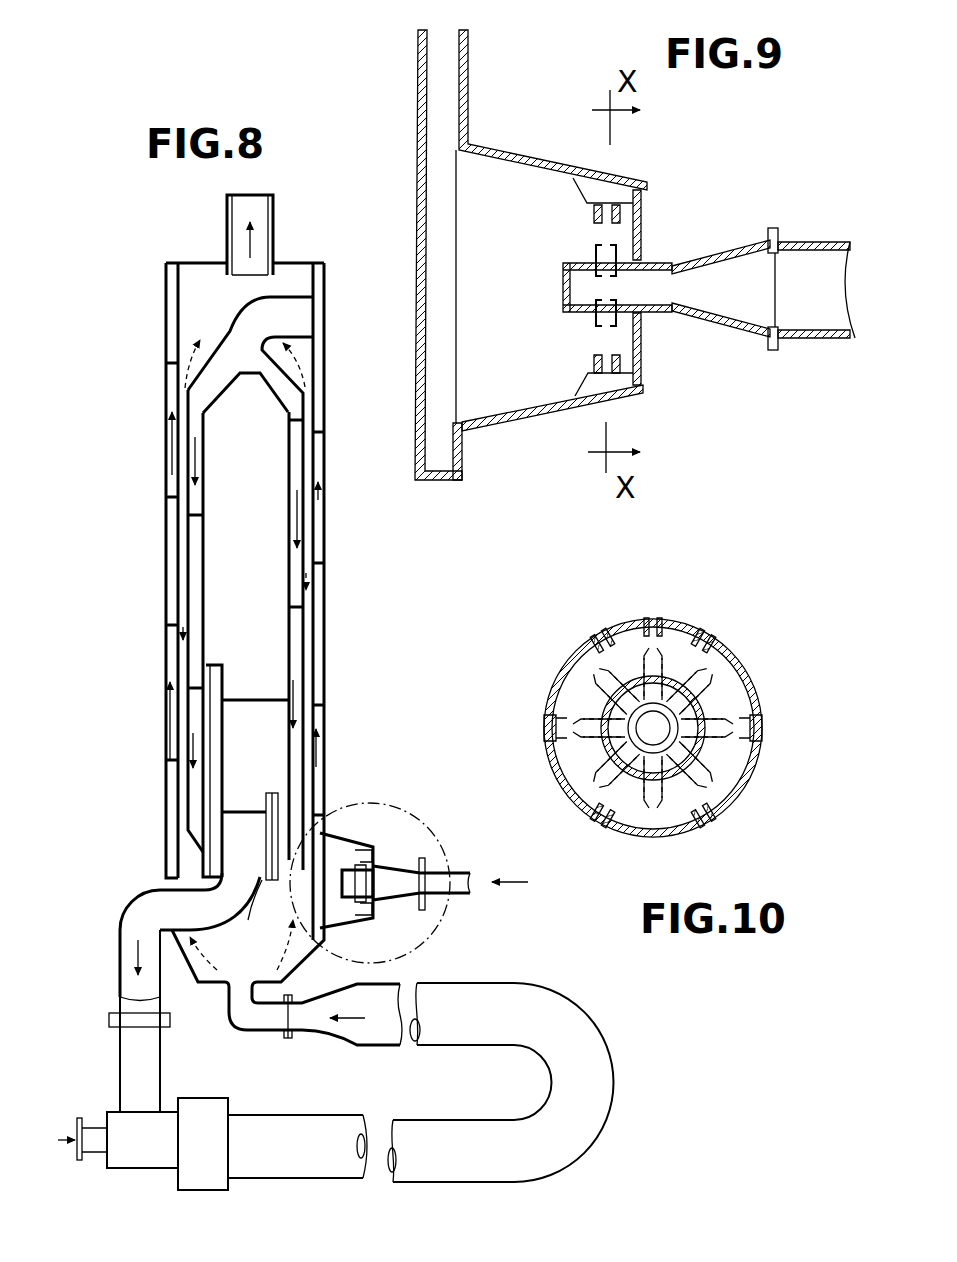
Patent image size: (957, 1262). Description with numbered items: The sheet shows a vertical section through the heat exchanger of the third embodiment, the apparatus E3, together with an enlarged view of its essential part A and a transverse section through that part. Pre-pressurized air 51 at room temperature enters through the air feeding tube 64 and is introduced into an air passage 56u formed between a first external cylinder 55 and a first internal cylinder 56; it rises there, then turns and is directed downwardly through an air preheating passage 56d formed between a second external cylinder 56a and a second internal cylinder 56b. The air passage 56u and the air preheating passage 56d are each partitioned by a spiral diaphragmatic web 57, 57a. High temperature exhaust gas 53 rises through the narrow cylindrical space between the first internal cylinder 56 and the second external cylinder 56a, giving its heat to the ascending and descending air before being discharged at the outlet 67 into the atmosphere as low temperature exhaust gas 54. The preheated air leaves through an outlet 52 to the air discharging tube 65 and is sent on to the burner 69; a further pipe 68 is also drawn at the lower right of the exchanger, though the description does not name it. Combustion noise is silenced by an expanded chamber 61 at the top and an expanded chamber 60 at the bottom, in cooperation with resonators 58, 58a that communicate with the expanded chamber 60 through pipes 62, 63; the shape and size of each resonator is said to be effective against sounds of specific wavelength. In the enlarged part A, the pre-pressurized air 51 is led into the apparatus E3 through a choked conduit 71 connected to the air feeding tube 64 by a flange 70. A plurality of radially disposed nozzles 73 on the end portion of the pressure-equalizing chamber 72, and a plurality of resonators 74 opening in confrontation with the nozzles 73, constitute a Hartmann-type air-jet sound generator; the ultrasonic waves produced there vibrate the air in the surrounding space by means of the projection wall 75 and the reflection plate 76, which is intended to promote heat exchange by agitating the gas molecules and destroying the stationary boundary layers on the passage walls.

In FIG. 8, the pre-pressurized air 51 is at (509, 863).
In FIG. 8, the outlet 52 is at (130, 953).
In FIG. 8, the high temperature exhaust gas 53 is at (345, 1040).
In FIG. 8, the low temperature exhaust gas 54 is at (250, 250).
In FIG. 8, the first external cylinder 55 is at (325, 522).
In FIG. 8, the first internal cylinder 56 is at (314, 708).
In FIG. 8, the second external cylinder 56a is at (305, 452).
In FIG. 8, the second internal cylinder 56b is at (291, 480).
In FIG. 8, the air passage 56u is at (173, 541).
In FIG. 8, the air preheating passage 56d is at (195, 596).
In FIG. 8, the spiral diaphragmatic web 57 is at (318, 565).
In FIG. 8, the spiral diaphragmatic web 57a is at (296, 612).
In FIG. 8, the resonator 58 is at (265, 740).
In FIG. 8, the resonator 58a is at (272, 649).
In FIG. 8, the expanded chamber 60 is at (278, 959).
In FIG. 8, the expanded chamber 61 is at (235, 315).
In FIG. 8, the pipe 62 is at (212, 780).
In FIG. 8, the pipe 63 is at (273, 807).
In FIG. 9, the air feeding tube 64 is at (826, 243).
In FIG. 8, the air discharging tube 65 is at (128, 1082).
In FIG. 8, the outlet 67 is at (227, 232).
In FIG. 8, the U-shaped pipe 68 is at (498, 985).
In FIG. 8, the burner 69 is at (195, 1173).
In FIG. 9, the flange 70 is at (774, 236).
In FIG. 9, the choked conduit 71 is at (688, 282).
In FIG. 10, the choked conduit 71 is at (655, 752).
In FIG. 9, the pressure-equalizing chamber 72 is at (590, 288).
In FIG. 10, the pressure-equalizing chamber 72 is at (607, 767).
In FIG. 9, the nozzles 73 is at (620, 258).
In FIG. 10, the nozzles 73 is at (708, 682).
In FIG. 9, the resonators 74 is at (594, 215).
In FIG. 10, the resonators 74 is at (713, 633).
In FIG. 9, the projection wall 75 is at (527, 160).
In FIG. 10, the projection wall 75 is at (563, 672).
In FIG. 9, the reflection plate 76 is at (641, 352).
In FIG. 8, the apparatus E3 is at (140, 452).
In FIG. 9, the apparatus E3 is at (497, 82).
In FIG. 8, the essential part A is at (380, 883).